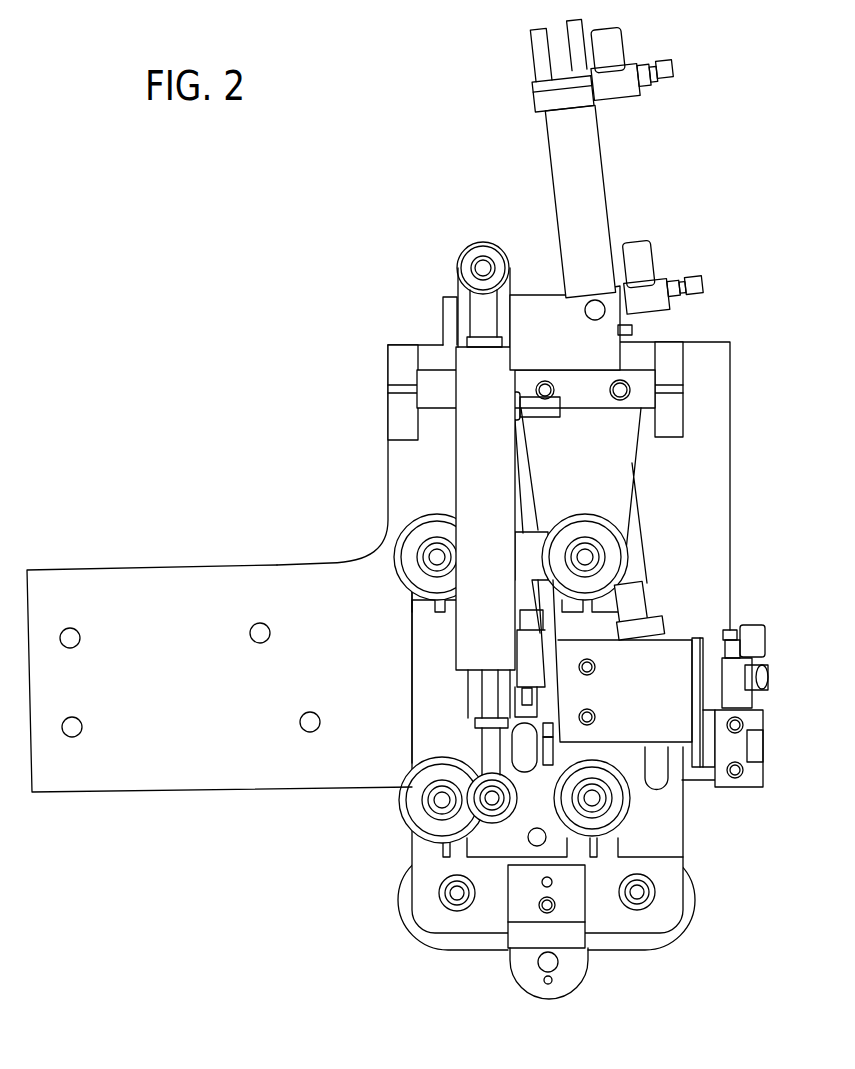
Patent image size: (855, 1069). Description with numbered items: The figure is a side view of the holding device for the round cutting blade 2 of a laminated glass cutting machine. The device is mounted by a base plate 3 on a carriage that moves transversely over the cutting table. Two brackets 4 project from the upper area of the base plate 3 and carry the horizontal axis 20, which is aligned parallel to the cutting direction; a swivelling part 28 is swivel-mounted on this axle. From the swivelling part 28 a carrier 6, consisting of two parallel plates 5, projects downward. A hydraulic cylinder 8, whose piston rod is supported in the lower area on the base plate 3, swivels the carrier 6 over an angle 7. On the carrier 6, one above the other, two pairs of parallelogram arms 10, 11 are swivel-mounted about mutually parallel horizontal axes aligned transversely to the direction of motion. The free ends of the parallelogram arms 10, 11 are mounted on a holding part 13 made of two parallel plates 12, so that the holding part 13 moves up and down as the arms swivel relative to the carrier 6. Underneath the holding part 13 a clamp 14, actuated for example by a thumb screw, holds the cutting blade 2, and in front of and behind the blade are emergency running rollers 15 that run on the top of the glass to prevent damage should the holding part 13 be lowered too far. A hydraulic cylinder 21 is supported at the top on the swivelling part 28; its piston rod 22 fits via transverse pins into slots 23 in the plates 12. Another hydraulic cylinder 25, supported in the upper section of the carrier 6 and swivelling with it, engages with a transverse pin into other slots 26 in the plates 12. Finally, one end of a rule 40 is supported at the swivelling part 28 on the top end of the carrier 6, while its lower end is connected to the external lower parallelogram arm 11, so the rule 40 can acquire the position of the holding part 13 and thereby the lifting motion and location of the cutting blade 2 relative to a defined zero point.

The cutting blade 2 is at (533, 970).
The base plate 3 is at (182, 630).
The brackets 4 is at (400, 367).
The plates 5 is at (593, 460).
The carrier 6 is at (653, 482).
The angle 7 is at (672, 660).
The hydraulic cylinder 8 is at (752, 777).
The parallelogram arms 10 is at (527, 560).
The parallelogram arms 11 is at (540, 797).
The plates 12 is at (447, 688).
The holding part 13 is at (403, 637).
The clamp 14 is at (545, 932).
The rollers 15 is at (415, 920).
The horizontal axis 20 is at (437, 393).
The hydraulic cylinder 21 is at (572, 152).
The piston rod 22 is at (637, 567).
The slots 23 is at (663, 777).
The hydraulic cylinder 25 is at (518, 677).
The slots 26 is at (455, 795).
The swivelling part 28 is at (540, 320).
The rule 40 is at (480, 470).